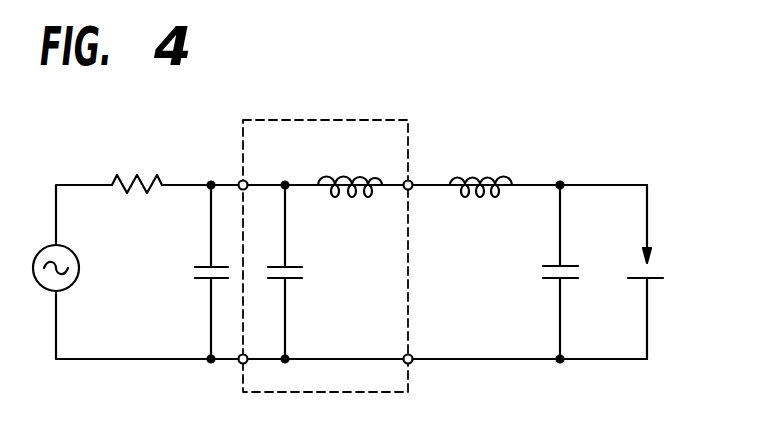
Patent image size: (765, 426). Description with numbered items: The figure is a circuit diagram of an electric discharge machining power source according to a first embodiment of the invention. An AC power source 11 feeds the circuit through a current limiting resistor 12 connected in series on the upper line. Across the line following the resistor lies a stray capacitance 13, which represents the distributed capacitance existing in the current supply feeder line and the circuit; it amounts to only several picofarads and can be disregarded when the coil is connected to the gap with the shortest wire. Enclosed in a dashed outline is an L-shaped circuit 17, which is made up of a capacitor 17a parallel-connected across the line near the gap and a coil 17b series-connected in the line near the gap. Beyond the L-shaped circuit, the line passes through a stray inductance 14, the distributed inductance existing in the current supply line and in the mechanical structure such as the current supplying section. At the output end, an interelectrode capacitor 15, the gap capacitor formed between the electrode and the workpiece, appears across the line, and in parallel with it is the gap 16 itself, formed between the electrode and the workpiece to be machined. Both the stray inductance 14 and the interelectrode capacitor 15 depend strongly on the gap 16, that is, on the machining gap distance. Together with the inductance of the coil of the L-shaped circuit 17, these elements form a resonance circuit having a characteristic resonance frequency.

The AC power source 11 is at (73, 284).
The current limiting resistor 12 is at (155, 182).
The stray capacitance 13 is at (199, 280).
The stray inductance 14 is at (492, 195).
The interelectrode capacitor 15 is at (574, 264).
The gap 16 is at (658, 275).
The L-shaped circuit 17 is at (388, 118).
The capacitor 17a is at (296, 281).
The coil 17b is at (364, 195).